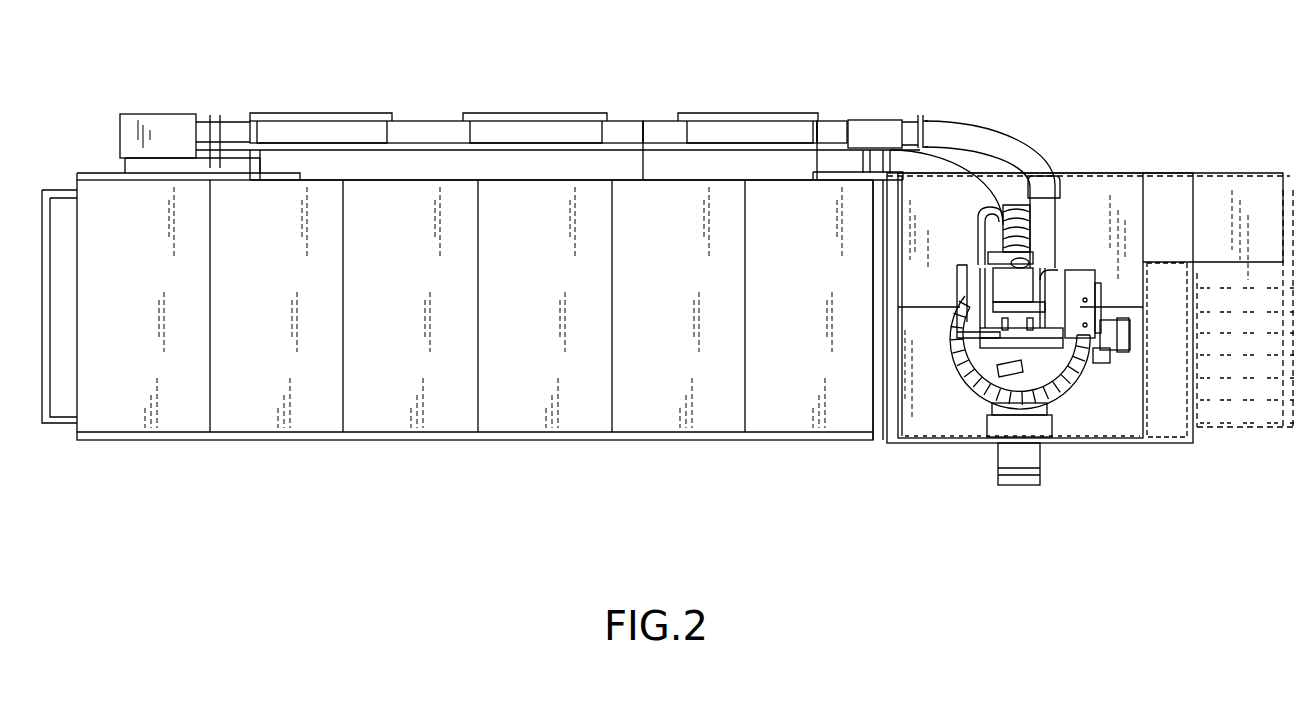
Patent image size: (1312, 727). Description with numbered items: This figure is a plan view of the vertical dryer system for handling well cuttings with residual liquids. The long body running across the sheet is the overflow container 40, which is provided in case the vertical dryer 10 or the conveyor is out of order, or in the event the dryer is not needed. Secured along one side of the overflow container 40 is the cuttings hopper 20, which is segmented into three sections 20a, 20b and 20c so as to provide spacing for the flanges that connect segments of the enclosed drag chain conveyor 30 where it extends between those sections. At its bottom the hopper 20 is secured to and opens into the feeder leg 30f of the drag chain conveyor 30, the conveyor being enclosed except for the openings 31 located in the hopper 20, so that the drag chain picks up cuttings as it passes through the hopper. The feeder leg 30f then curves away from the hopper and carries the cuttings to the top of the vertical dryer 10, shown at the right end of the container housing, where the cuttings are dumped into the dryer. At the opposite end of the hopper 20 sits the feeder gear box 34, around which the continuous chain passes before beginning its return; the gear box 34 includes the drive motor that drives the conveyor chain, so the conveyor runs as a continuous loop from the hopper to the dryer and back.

The vertical dryer 10 is at (1053, 400).
The hopper 20 is at (258, 104).
The hopper section 20a is at (813, 103).
The hopper section 20b is at (567, 113).
The hopper section 20c is at (363, 113).
The drag chain conveyor 30 is at (978, 190).
The feeder leg 30f is at (1020, 138).
The openings 31 is at (328, 127).
The feeder gear box 34 is at (176, 122).
The overflow container 40 is at (535, 310).